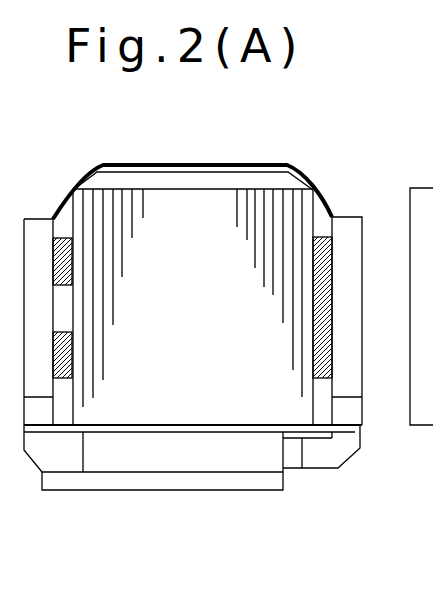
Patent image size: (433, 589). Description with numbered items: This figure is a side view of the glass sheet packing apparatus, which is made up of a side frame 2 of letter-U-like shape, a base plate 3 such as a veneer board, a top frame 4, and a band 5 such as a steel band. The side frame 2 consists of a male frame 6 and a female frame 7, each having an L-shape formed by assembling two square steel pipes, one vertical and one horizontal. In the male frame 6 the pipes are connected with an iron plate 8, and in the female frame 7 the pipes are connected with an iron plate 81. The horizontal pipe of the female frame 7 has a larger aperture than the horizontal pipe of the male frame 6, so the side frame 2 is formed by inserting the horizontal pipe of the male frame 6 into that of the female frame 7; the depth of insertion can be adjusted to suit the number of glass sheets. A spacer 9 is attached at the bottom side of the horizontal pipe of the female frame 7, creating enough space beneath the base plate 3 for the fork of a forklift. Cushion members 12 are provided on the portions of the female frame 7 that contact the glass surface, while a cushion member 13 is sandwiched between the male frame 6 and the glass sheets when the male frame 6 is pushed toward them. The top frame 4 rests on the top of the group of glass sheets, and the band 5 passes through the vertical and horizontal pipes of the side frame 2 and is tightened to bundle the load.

The side frame 2 is at (362, 215).
The base plate 3 is at (355, 432).
The top frame 4 is at (191, 182).
The band 5 is at (315, 175).
The male frame 6 is at (350, 338).
The female frame 7 is at (37, 217).
The iron plate 8 is at (342, 457).
The spacer 9 is at (262, 478).
The cushion member 12 is at (72, 364).
The cushion member 13 is at (335, 286).
The iron plate 81 is at (62, 460).